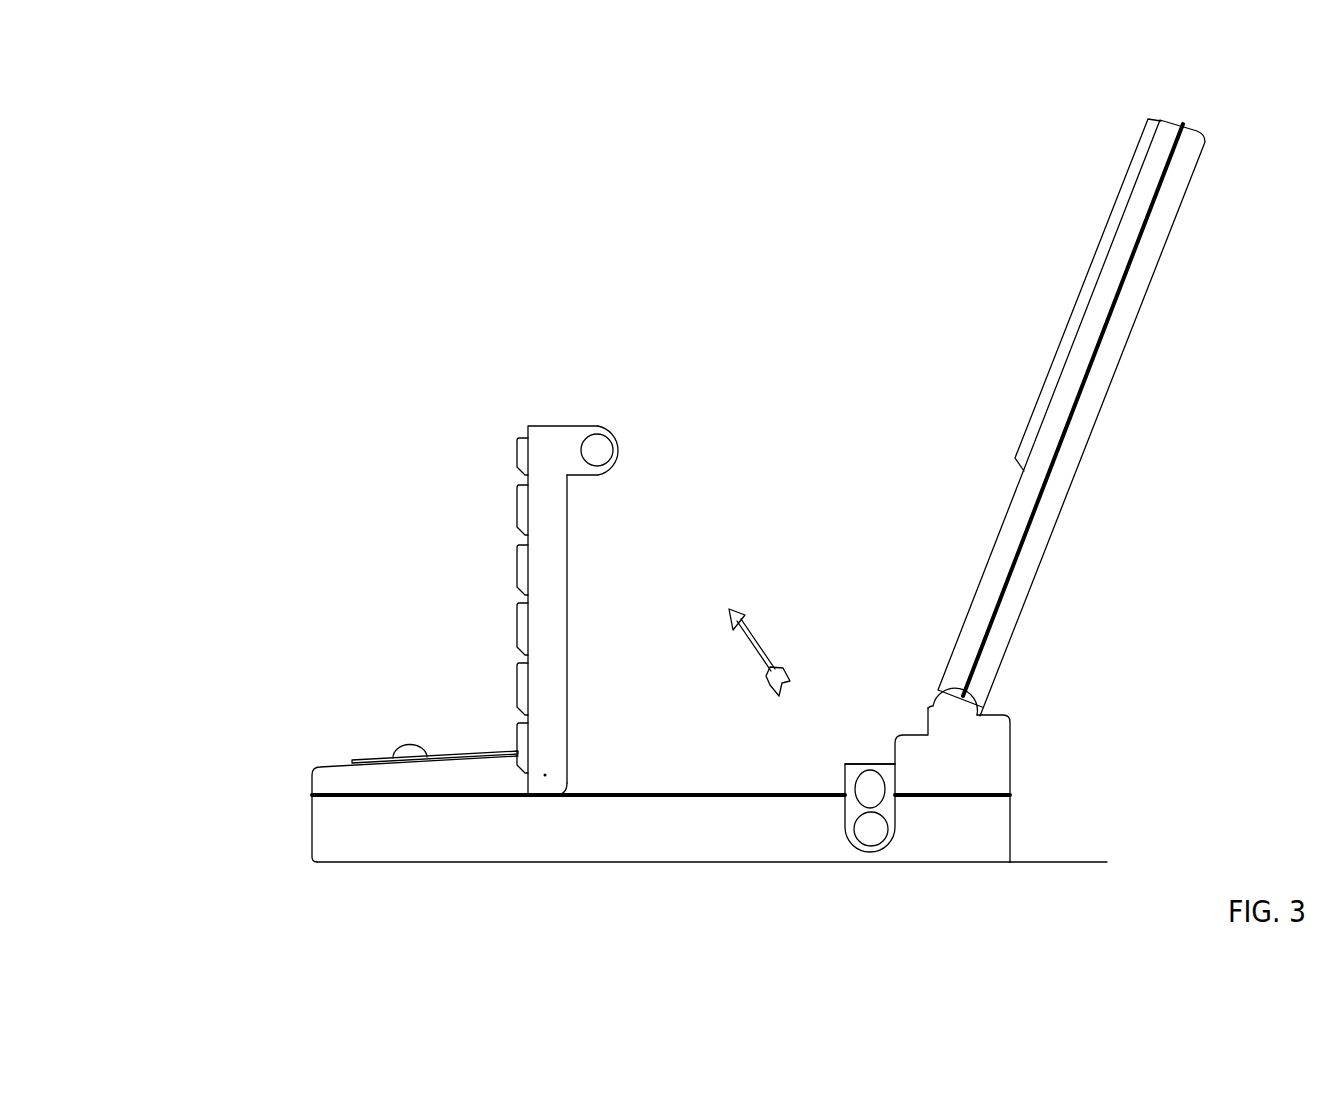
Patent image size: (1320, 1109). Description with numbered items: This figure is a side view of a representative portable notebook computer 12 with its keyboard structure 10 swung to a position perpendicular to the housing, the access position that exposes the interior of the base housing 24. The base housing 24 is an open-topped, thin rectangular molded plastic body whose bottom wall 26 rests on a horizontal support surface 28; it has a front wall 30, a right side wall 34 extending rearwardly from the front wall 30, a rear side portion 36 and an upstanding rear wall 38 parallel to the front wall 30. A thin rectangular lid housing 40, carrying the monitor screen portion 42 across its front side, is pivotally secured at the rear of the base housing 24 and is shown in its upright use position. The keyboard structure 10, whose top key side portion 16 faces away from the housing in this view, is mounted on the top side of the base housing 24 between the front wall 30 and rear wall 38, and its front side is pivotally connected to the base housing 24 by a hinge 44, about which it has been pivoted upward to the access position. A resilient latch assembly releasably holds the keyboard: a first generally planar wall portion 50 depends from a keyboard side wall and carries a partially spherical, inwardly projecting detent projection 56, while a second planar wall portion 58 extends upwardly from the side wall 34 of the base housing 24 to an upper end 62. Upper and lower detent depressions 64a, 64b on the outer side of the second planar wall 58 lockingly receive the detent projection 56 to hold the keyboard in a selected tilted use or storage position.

The keyboard structure 10 is at (514, 600).
The notebook computer 12 is at (638, 329).
The top key side portion 16 is at (518, 538).
The base housing 24 is at (332, 866).
The bottom wall 26 is at (565, 863).
The horizontal support surface 28 is at (1060, 862).
The front wall 30 is at (312, 800).
The right side wall 34 is at (645, 830).
The rear side portion 36 is at (917, 735).
The rear wall 38 is at (1010, 818).
The lid housing 40 is at (1160, 276).
The screen portion 42 is at (1104, 228).
The hinge 44 is at (545, 775).
The first generally planar wall portion 50 is at (618, 437).
The detent projection 56 is at (590, 433).
The second planar wall portion 58 is at (845, 775).
The upper end 62 is at (870, 764).
The upper detent depression 64a is at (878, 787).
The lower detent depression 64b is at (880, 830).